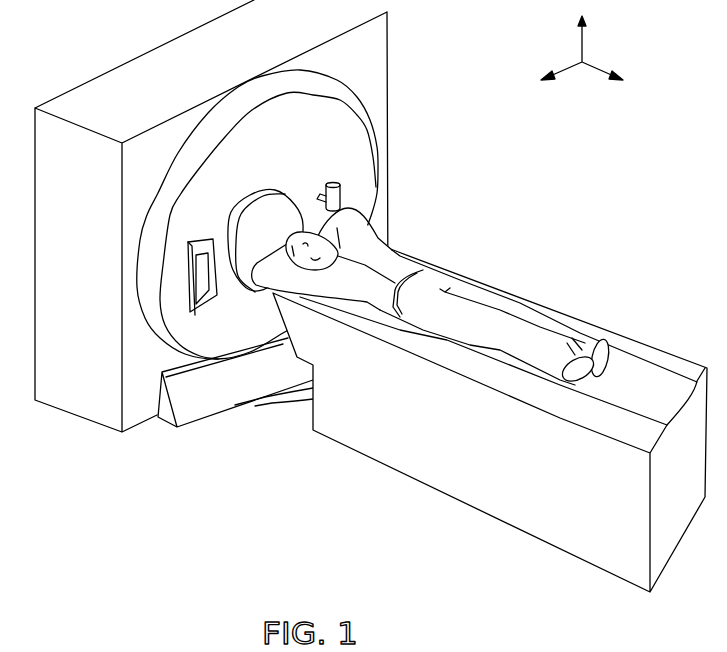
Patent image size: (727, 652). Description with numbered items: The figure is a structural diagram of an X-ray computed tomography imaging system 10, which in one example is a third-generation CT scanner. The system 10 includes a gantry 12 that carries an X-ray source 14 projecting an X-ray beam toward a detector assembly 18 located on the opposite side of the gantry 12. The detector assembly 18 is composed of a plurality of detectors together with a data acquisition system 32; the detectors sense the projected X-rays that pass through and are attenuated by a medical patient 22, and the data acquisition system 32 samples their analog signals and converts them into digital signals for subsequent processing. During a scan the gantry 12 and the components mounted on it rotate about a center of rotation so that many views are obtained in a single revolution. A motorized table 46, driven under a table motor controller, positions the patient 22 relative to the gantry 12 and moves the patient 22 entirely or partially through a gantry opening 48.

The CT imaging system 10 is at (371, 296).
The gantry 12 is at (211, 216).
The X-ray source 14 is at (341, 192).
The detector assembly 18 is at (210, 298).
The medical patient 22 is at (389, 268).
The data acquisition system 32 is at (203, 238).
The motorized table 46 is at (474, 492).
The gantry opening 48 is at (260, 223).